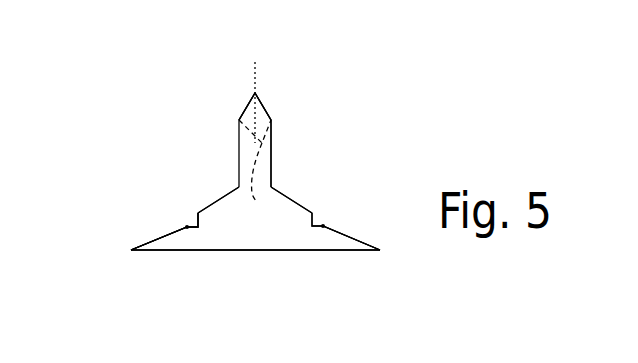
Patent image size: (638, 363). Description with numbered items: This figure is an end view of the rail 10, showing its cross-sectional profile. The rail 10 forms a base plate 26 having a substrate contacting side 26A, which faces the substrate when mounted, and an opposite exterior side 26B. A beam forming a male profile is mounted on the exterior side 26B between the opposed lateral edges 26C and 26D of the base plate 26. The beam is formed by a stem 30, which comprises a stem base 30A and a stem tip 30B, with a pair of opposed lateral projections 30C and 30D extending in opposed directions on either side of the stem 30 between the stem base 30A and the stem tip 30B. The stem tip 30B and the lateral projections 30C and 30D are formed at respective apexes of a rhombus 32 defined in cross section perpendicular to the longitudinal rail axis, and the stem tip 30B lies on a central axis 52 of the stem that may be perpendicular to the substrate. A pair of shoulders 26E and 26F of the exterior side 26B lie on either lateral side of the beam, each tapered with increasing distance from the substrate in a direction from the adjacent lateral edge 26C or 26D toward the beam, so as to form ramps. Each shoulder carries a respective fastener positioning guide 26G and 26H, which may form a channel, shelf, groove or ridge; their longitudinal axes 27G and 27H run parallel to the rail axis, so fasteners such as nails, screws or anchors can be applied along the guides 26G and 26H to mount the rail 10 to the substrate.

The rail 10 is at (148, 48).
The base plate 26 is at (267, 251).
The substrate contacting side 26A is at (219, 251).
The exterior side 26B is at (203, 153).
The lateral edge 26C is at (130, 250).
The lateral edge 26D is at (380, 250).
The shoulder 26E is at (165, 172).
The shoulder 26F is at (354, 161).
The fastener positioning guide 26G is at (187, 227).
The fastener positioning guide 26H is at (323, 226).
The longitudinal axis 27G is at (187, 230).
The longitudinal axis 27H is at (323, 226).
The stem 30 is at (307, 134).
The stem base 30A is at (272, 186).
The stem tip 30B is at (273, 81).
The lateral projection 30C is at (239, 120).
The lateral projection 30D is at (272, 120).
The rhombus 32 is at (258, 172).
The central axis 52 is at (257, 70).